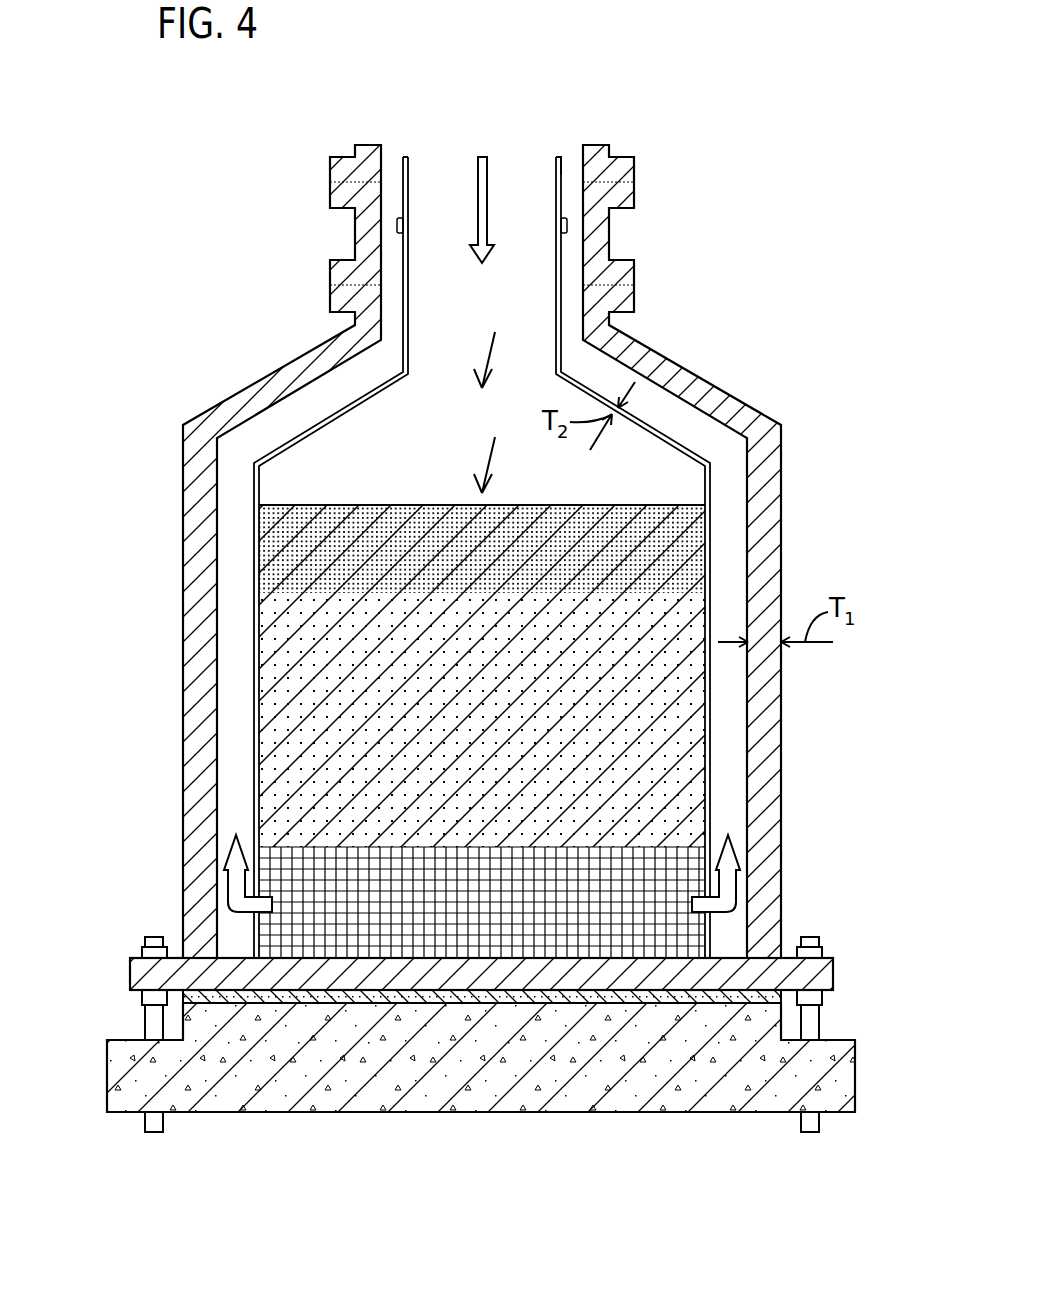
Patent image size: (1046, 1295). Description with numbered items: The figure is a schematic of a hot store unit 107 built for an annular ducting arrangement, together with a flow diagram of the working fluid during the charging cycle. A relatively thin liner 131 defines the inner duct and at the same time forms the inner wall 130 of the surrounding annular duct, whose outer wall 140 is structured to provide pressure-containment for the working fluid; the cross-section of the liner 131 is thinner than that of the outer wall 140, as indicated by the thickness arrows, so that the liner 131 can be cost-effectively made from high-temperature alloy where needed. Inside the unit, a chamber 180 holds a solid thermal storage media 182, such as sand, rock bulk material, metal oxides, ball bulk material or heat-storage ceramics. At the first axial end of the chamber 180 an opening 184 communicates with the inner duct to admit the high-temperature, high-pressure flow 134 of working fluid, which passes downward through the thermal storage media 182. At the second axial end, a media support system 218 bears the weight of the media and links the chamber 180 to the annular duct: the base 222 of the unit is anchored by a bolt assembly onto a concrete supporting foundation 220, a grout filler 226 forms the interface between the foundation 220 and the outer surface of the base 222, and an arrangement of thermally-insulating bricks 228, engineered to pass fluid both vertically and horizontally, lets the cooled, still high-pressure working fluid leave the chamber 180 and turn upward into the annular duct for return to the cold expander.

The hot store unit 107 is at (522, 518).
The inner wall 130 is at (562, 264).
The liner 131 is at (587, 313).
The high-temperature, high-pressure flow 134 is at (487, 202).
The outer wall 140 is at (763, 520).
The chamber 180 is at (493, 450).
The thermal storage media 182 is at (283, 663).
The opening 184 is at (493, 344).
The media support system 218 is at (84, 1095).
The supporting foundation 220 is at (650, 1070).
The base 222 is at (332, 977).
The filler 226 is at (497, 997).
The thermally-insulating bricks 228 is at (328, 878).